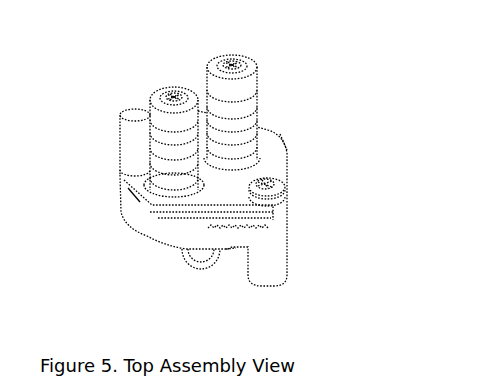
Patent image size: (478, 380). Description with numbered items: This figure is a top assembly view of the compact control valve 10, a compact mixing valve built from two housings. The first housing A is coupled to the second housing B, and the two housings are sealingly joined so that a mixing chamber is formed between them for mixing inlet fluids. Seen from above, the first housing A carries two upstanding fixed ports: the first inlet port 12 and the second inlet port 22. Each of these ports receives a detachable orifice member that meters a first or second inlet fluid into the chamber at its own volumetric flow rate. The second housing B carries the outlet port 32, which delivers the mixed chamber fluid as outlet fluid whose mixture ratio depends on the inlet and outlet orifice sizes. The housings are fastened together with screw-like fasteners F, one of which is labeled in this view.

The compact control valve 10 is at (107, 57).
The first inlet port 12 is at (163, 88).
The second inlet port 22 is at (247, 57).
The screw-like fastener F is at (136, 116).
The outlet port 32 is at (197, 266).
The first housing A is at (285, 138).
The second housing B is at (230, 249).